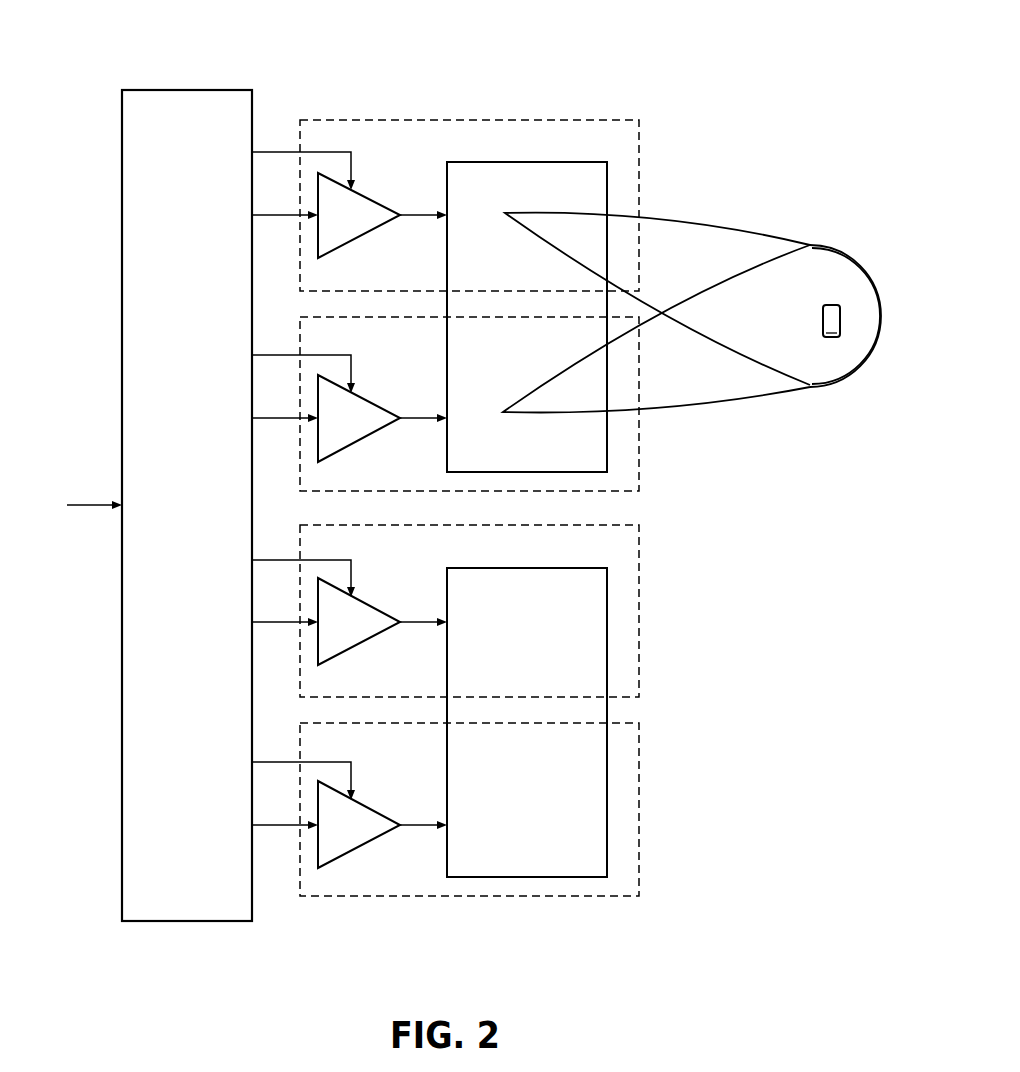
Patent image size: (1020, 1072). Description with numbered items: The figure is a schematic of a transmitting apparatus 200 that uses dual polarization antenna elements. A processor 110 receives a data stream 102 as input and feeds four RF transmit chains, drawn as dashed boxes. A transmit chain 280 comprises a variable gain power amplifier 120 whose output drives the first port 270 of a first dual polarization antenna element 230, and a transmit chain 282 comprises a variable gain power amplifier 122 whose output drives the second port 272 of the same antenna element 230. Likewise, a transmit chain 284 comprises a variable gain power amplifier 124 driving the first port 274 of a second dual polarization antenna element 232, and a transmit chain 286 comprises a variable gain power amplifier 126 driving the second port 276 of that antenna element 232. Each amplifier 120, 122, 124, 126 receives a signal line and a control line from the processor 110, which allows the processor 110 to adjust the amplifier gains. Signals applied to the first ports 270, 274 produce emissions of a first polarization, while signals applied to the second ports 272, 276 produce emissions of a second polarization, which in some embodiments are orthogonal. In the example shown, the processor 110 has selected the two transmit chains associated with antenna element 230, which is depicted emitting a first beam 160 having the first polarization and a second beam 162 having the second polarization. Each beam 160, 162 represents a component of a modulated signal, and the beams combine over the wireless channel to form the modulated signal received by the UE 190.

The transmitting apparatus 200 is at (300, 57).
The data stream 102 is at (88, 502).
The processor 110 is at (207, 527).
The variable gain power amplifier 120 is at (365, 226).
The variable gain power amplifier 122 is at (365, 429).
The variable gain power amplifier 124 is at (365, 633).
The variable gain power amplifier 126 is at (365, 835).
The first beam 160 is at (726, 232).
The second beam 162 is at (726, 398).
The UE 190 is at (822, 316).
The first dual polarization antenna element 230 is at (547, 280).
The second dual polarization antenna element 232 is at (547, 683).
The first port 270 is at (449, 218).
The second port 272 is at (449, 421).
The first port 274 is at (449, 625).
The second port 276 is at (449, 828).
The transmit chain 280 is at (316, 120).
The transmit chain 282 is at (316, 317).
The transmit chain 284 is at (316, 525).
The transmit chain 286 is at (316, 723).